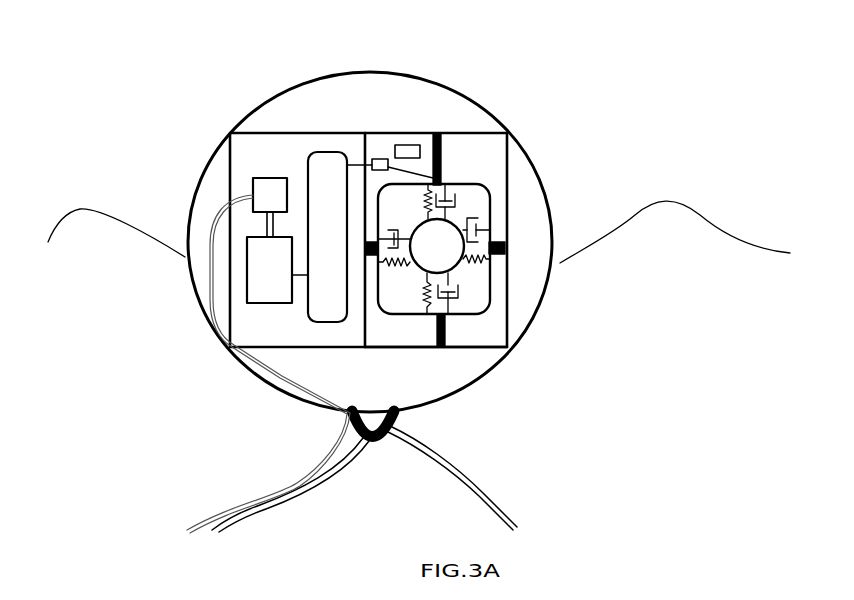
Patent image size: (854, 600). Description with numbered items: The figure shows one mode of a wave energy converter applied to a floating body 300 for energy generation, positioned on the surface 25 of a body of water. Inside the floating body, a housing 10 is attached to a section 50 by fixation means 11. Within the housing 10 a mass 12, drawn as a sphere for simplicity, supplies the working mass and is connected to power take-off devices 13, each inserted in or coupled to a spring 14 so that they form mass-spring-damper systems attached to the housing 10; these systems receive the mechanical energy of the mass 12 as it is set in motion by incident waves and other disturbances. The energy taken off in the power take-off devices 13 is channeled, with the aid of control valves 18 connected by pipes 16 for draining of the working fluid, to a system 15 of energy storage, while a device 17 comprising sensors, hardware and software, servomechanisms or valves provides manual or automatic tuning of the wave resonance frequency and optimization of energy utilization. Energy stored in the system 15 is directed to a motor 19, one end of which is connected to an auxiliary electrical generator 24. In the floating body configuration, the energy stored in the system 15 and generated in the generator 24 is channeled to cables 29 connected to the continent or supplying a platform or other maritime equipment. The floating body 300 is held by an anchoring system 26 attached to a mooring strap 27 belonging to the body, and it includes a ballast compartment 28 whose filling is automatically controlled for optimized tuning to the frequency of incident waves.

The floating body 300 is at (180, 130).
The ballast compartment 28 is at (453, 375).
The surface 25 is at (708, 192).
The auxiliary electrical generator 24 is at (255, 167).
The motor 19 is at (273, 315).
The system of energy storage 15 is at (310, 147).
The pipes 16 is at (352, 160).
The control valves 18 is at (377, 152).
The device 17 is at (408, 140).
The fixation means 11 is at (445, 150).
The power take-off device 13 is at (465, 190).
The mass 12 is at (457, 273).
The spring 14 is at (395, 277).
The housing 10 is at (487, 313).
The section 50 is at (512, 277).
The mooring strap 27 is at (402, 420).
The anchoring system 26 is at (482, 485).
The cables 29 is at (208, 270).